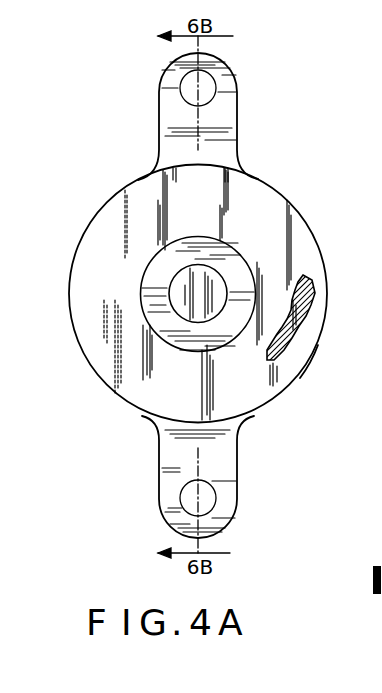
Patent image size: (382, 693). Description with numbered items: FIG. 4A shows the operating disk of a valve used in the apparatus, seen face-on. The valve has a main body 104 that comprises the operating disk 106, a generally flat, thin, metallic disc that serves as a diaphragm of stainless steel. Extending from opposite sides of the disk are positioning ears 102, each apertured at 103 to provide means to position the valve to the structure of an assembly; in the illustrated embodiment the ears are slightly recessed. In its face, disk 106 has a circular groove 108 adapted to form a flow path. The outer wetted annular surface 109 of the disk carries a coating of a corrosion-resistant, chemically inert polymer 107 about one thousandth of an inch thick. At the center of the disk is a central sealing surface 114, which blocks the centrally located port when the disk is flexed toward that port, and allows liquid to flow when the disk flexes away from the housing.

The positioning ears 102 is at (161, 85).
The aperture 103 is at (205, 98).
The main body 104 is at (316, 238).
The operating disk 106 is at (303, 347).
The polymer coating 107 is at (313, 297).
The circular groove 108 is at (163, 273).
The outer wetted annular surface 109 is at (268, 218).
The central sealing surface 114 is at (181, 303).